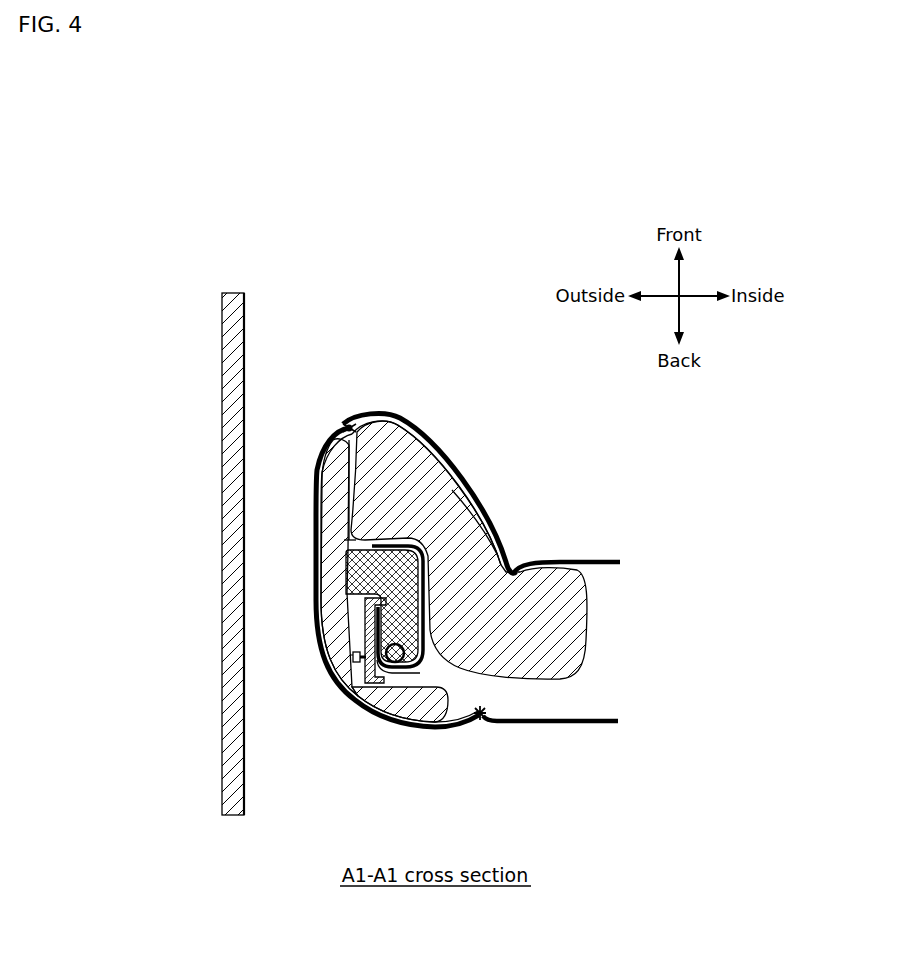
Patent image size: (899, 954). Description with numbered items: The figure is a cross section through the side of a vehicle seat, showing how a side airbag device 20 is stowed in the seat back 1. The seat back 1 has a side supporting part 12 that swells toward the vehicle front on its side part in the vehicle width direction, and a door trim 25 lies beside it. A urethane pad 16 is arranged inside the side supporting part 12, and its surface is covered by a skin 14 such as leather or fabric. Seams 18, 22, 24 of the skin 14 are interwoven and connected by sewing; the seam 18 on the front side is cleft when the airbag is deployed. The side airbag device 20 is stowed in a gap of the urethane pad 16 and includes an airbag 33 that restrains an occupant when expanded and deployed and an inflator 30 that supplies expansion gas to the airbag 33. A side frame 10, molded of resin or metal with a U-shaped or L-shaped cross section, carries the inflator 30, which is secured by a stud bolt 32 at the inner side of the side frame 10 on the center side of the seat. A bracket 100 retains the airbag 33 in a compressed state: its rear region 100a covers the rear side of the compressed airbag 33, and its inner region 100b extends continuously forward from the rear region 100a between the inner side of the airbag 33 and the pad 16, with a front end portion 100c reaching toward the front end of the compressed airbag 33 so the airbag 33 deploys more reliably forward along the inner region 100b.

The seat back 1 is at (605, 688).
The side frame 10 is at (332, 601).
The side supporting part 12 is at (432, 421).
The skin 14 is at (377, 411).
The urethane pad 16 is at (320, 476).
The seam 18 is at (346, 425).
The side airbag device 20 is at (351, 533).
The seam 22 is at (520, 560).
The seam 24 is at (482, 725).
The door trim 25 is at (246, 302).
The inflator 30 is at (420, 669).
The stud bolt 32 is at (354, 657).
The airbag 33 is at (340, 568).
The bracket 100 is at (455, 520).
The rear region 100a is at (398, 678).
The inner region 100b is at (422, 622).
The front end portion 100c is at (350, 541).